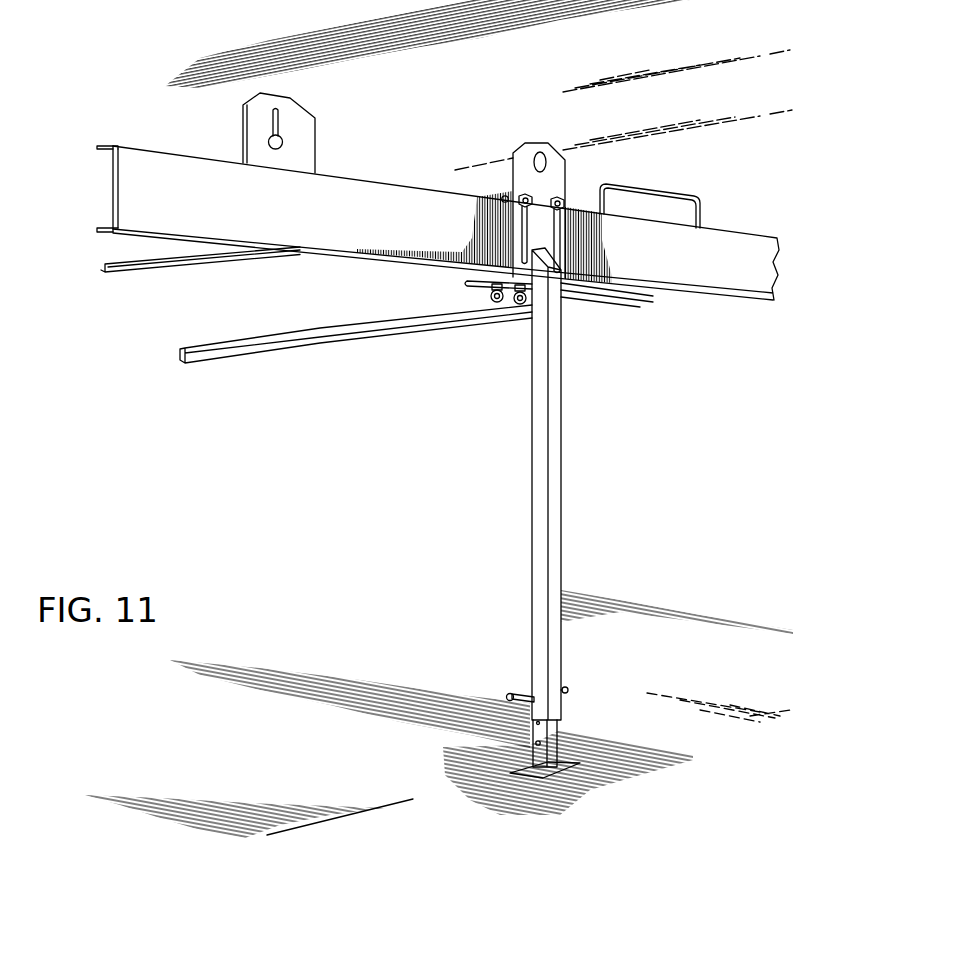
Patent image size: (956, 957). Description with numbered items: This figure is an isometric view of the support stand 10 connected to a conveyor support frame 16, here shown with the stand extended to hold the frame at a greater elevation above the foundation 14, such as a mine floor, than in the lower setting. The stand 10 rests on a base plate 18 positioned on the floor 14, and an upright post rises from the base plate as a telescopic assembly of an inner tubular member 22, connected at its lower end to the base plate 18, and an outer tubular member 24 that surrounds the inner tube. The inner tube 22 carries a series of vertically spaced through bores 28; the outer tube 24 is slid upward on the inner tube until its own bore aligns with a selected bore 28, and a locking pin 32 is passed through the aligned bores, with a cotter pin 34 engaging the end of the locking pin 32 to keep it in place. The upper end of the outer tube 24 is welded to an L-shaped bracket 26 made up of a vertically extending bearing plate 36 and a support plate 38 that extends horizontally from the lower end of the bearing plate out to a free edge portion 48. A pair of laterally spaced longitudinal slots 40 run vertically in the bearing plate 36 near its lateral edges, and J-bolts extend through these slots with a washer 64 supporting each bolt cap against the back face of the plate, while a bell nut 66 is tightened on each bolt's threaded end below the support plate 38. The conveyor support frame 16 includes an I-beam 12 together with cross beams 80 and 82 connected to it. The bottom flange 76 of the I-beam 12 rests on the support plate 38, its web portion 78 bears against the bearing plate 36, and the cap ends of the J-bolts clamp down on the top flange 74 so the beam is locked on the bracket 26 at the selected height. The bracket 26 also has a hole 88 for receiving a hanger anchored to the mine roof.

The support stand 10 is at (542, 540).
The I-beam 12 is at (197, 173).
The foundation 14 is at (620, 724).
The conveyor support frame 16 is at (401, 177).
The base plate 18 is at (573, 760).
The inner tubular member 22 is at (567, 745).
The outer tubular member 24 is at (558, 518).
The L-shaped bracket 26 is at (562, 171).
The through bores 28 is at (542, 755).
The locking pin 32 is at (511, 694).
The cotter pin 34 is at (566, 686).
The bearing plate 36 is at (527, 153).
The support plate 38 is at (467, 283).
The longitudinal slots 40 is at (522, 233).
The free edge portion 48 is at (502, 197).
The washer 64 is at (520, 190).
The bell nut 66 is at (488, 303).
The top flange 74 is at (103, 147).
The bottom flange 76 is at (110, 229).
The web portion 78 is at (113, 183).
The cross beam 80 is at (265, 358).
The cross beam 82 is at (143, 268).
The hole 88 is at (545, 152).